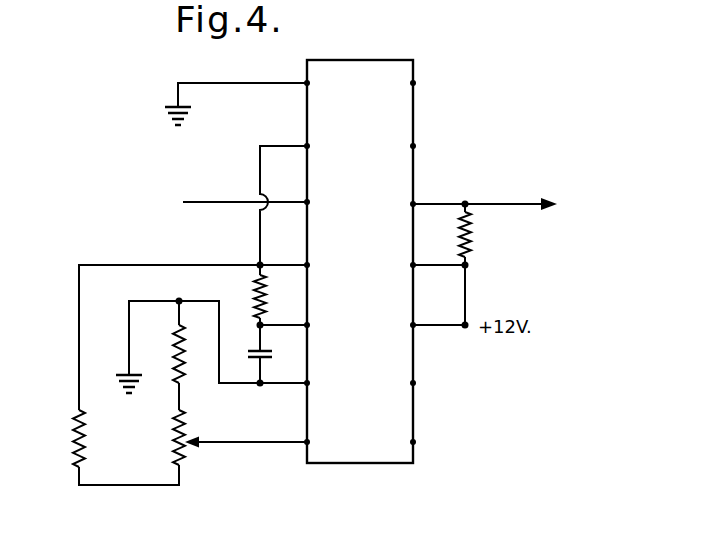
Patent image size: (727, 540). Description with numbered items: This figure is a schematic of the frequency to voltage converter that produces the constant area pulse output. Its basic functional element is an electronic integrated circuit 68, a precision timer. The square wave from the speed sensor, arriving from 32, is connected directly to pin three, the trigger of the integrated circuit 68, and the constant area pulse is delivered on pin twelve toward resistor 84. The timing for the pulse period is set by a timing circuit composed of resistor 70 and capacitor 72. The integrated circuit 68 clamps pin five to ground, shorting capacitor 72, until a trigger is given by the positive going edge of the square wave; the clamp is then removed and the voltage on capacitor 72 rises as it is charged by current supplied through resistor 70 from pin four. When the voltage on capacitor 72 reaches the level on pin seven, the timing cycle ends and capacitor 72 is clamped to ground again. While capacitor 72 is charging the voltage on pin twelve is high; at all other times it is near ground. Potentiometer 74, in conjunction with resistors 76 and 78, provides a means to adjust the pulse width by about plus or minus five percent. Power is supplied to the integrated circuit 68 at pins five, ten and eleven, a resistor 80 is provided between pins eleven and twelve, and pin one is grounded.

The integrated circuit 68 is at (369, 245).
The resistor 70 is at (254, 296).
The capacitor 72 is at (276, 358).
The potentiometer 74 is at (184, 459).
The resistor 76 is at (175, 348).
The resistor 78 is at (74, 431).
The resistor 80 is at (471, 243).
The input signal source 32 is at (198, 201).
The resistor (Fig. 5) 84 is at (522, 201).